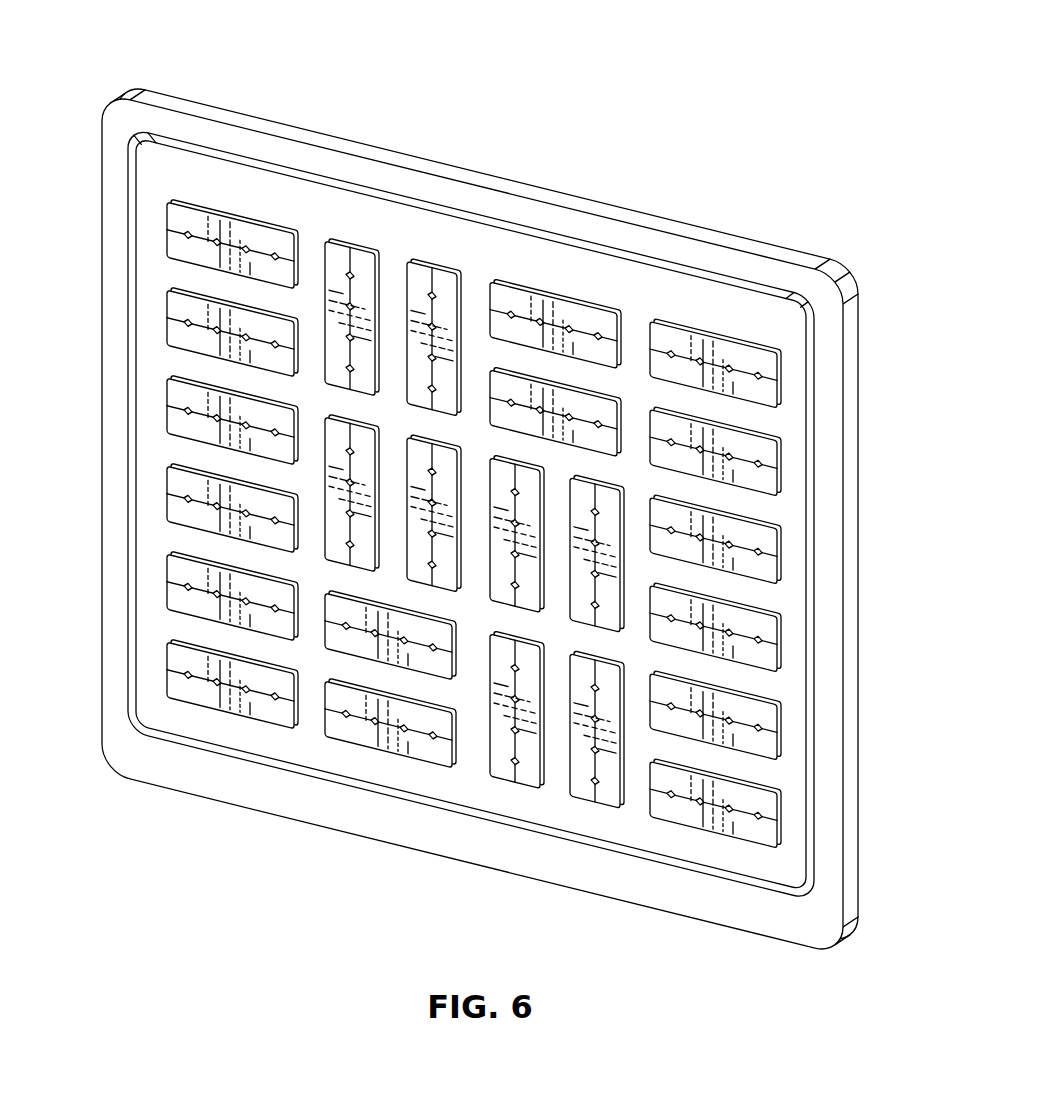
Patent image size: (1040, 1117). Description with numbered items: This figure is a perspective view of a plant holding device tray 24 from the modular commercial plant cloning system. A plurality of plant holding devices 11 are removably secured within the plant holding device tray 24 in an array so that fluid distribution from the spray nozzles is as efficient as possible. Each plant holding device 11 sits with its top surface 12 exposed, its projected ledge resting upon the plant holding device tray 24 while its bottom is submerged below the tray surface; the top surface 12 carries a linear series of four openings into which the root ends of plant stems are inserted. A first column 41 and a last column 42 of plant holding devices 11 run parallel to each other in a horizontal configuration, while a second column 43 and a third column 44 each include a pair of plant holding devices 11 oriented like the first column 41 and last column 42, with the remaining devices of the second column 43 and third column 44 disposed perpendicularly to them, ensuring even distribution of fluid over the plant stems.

The plant holding device 11 is at (178, 303).
The top surface 12 is at (757, 723).
The plant holding device tray 24 is at (848, 470).
The first column 41 is at (235, 198).
The last column 42 is at (722, 320).
The second column 43 is at (385, 762).
The third column 44 is at (559, 276).